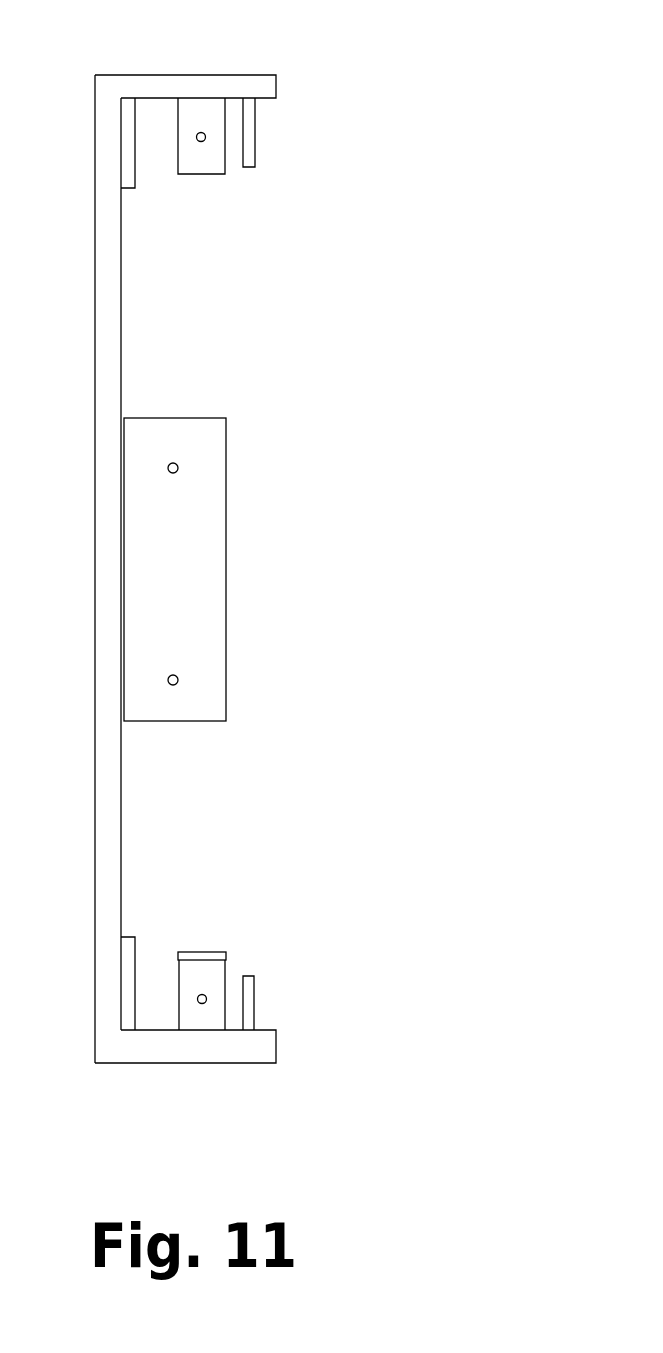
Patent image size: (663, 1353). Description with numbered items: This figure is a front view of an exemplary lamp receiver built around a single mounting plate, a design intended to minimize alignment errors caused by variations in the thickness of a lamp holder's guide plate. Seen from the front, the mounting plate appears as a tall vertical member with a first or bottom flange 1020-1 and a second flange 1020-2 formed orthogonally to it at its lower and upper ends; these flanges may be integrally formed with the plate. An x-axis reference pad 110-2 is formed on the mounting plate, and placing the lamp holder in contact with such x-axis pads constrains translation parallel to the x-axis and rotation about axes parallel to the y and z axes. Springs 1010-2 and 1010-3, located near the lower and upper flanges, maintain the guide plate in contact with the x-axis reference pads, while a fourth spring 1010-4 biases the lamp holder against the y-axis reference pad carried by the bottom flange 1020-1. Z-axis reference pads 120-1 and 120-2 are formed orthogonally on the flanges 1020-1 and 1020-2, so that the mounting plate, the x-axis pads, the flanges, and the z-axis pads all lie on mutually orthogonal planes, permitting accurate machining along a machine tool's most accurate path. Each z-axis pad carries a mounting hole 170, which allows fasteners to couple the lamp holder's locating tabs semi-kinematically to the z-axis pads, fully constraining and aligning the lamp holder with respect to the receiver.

The first or bottom flange 1020-1 is at (193, 1063).
The second flange 1020-2 is at (192, 75).
The x-axis reference pad 110-2 is at (135, 143).
The z-axis reference pad 120-1 is at (188, 977).
The z-axis reference pad 120-2 is at (190, 155).
The mounting hole 170 is at (221, 150).
The spring 1010-2 is at (255, 1017).
The spring 1010-3 is at (255, 128).
The fourth spring 1010-4 is at (212, 950).